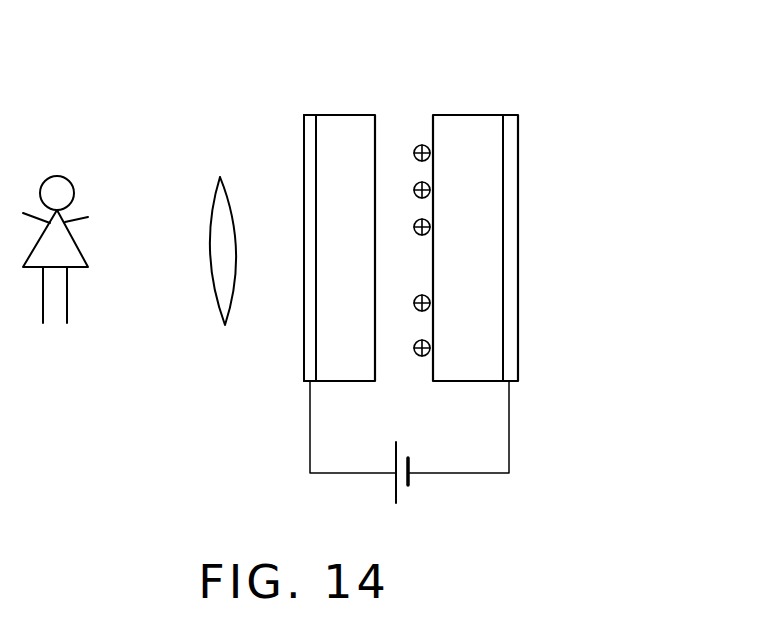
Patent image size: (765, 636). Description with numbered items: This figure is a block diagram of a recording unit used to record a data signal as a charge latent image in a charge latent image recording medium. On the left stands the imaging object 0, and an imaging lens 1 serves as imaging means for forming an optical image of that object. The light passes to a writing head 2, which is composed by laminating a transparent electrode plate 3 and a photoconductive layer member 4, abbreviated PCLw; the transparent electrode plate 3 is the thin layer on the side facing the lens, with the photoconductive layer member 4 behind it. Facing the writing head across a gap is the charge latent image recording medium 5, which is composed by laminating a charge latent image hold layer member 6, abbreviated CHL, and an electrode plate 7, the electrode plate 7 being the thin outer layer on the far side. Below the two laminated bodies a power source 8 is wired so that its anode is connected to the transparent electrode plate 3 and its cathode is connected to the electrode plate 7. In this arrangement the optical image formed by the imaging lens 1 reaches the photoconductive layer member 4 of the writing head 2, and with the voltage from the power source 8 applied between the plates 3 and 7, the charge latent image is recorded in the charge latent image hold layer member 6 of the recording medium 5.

The imaging object 0 is at (56, 176).
The imaging lens 1 is at (217, 177).
The writing head 2 is at (289, 333).
The transparent electrode plate 3 is at (310, 117).
The photoconductive layer member 4 is at (355, 125).
The charge latent image recording medium 5 is at (524, 108).
The charge latent image hold layer member 6 is at (465, 128).
The electrode plate 7 is at (511, 155).
The power source 8 is at (405, 492).